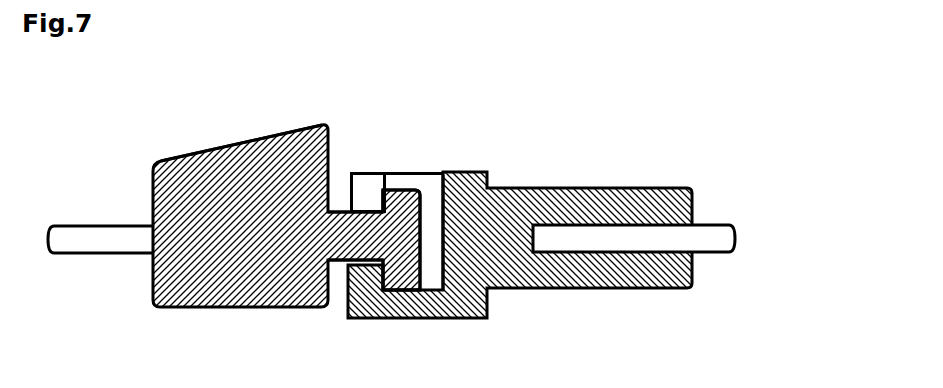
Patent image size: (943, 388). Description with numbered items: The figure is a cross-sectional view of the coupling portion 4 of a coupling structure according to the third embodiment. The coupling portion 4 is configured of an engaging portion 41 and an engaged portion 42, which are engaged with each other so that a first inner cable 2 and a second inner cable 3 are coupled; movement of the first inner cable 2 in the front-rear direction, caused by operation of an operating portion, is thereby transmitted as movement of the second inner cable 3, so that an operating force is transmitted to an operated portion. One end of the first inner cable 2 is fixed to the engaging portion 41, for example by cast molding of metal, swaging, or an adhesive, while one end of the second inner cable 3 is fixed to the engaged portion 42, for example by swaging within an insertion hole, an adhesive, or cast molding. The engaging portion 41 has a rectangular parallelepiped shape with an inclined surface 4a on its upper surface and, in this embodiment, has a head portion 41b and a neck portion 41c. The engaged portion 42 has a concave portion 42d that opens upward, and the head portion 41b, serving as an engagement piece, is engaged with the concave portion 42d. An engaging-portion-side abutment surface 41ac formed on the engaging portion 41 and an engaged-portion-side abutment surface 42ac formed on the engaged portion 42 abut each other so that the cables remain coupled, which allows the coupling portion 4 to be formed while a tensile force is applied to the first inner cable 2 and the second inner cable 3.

The first inner cable 2 is at (80, 237).
The second inner cable 3 is at (707, 238).
The coupling portion 4 is at (783, 101).
The inclined surface 4a is at (200, 155).
The engaging portion 41 is at (245, 168).
The engaging-portion-side abutment surface 41ac is at (382, 203).
The head portion 41b is at (405, 292).
The neck portion 41c is at (345, 262).
The engaged portion 42 is at (558, 188).
The engaged-portion-side abutment surface 42ac is at (386, 187).
The concave portion 42d is at (442, 178).